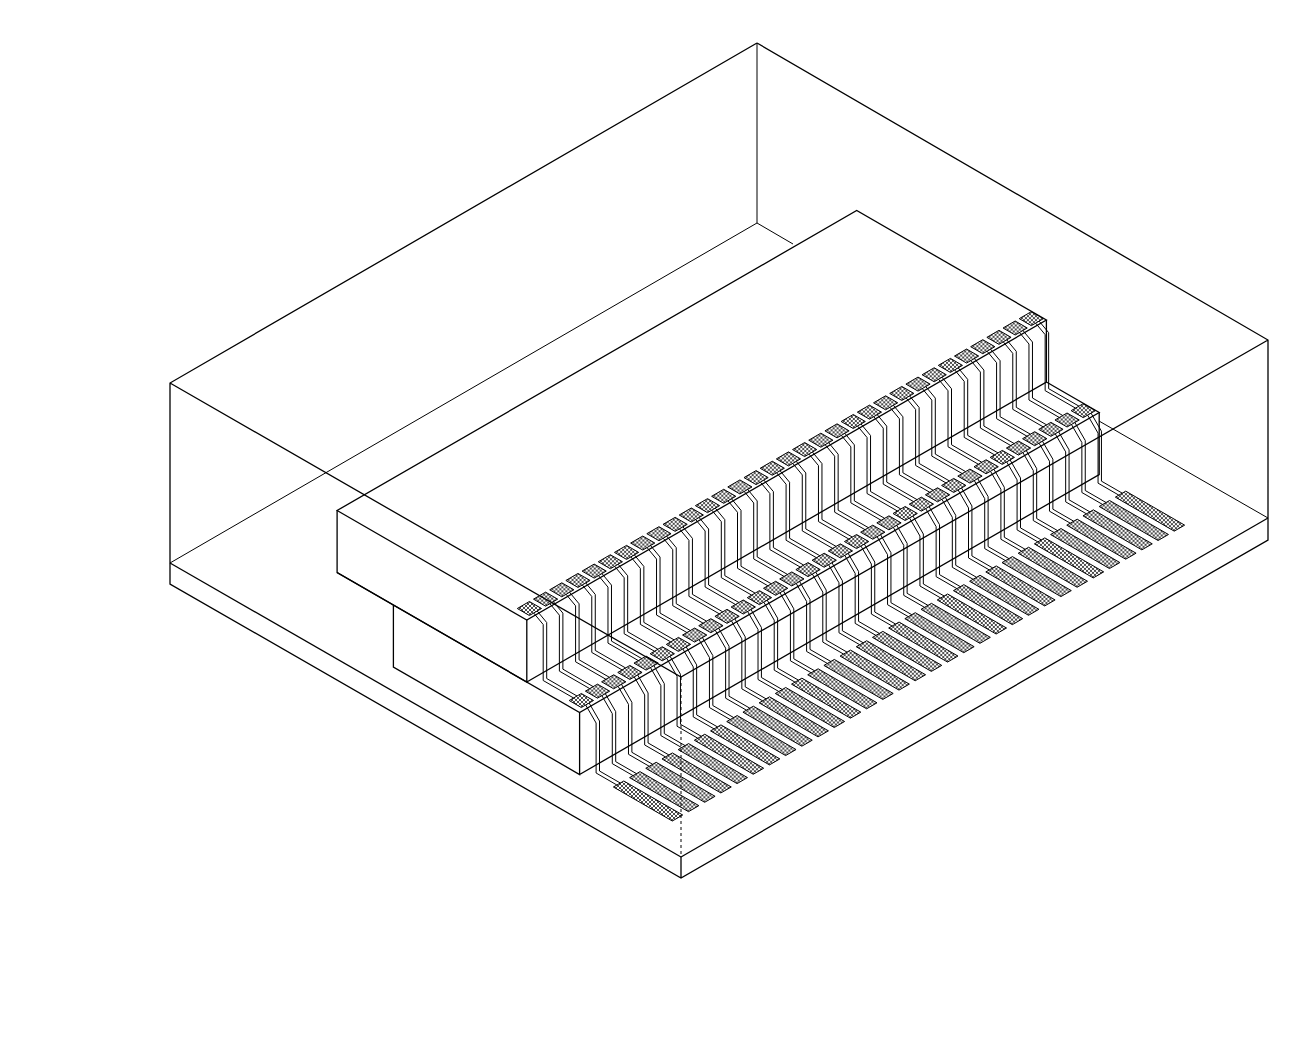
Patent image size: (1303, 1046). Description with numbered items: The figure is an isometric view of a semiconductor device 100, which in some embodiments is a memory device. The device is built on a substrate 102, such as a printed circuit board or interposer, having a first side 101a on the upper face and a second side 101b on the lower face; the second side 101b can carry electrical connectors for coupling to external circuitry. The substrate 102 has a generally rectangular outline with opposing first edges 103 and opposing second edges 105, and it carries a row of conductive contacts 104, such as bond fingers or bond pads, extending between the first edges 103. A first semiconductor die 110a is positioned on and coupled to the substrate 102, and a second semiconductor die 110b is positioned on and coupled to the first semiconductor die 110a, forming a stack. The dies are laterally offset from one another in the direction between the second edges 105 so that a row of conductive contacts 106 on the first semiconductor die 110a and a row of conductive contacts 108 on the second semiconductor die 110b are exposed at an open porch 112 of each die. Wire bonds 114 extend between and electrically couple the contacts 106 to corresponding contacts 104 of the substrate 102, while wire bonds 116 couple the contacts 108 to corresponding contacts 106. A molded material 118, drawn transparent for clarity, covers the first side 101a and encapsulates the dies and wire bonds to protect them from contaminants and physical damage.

The semiconductor device 100 is at (206, 192).
The first side 101a is at (1215, 527).
The second side 101b is at (1112, 641).
The substrate 102 is at (1075, 638).
The first edges 103 is at (1200, 478).
The conductive contacts 104 is at (885, 680).
The second edges 105 is at (352, 456).
The conductive contacts 106 is at (597, 693).
The conductive contacts 108 is at (1030, 318).
The first semiconductor die 110a is at (436, 657).
The second semiconductor die 110b is at (378, 557).
The porch 112 is at (960, 320).
The wire bonds 114 is at (960, 585).
The wire bonds 116 is at (740, 488).
The molded material 118 is at (408, 290).